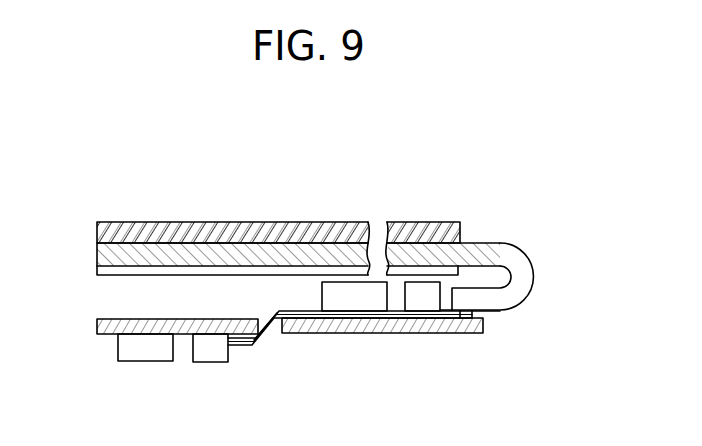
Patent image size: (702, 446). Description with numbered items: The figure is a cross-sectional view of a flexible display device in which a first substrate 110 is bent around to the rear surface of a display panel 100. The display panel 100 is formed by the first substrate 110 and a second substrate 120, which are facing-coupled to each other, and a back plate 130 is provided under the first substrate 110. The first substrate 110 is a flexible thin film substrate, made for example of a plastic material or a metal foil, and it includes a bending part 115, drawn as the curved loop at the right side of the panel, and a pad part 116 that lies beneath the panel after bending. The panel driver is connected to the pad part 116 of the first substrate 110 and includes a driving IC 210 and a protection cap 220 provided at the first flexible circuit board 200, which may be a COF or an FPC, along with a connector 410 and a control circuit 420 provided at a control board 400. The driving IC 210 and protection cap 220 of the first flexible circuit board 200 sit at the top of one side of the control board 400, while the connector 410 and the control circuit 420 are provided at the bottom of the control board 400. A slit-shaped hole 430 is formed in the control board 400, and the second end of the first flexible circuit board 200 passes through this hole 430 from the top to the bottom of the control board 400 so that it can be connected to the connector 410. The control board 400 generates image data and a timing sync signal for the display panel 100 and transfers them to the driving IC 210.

The display panel 100 is at (285, 163).
The first substrate 110 is at (176, 258).
The second substrate 120 is at (228, 237).
The back plate 130 is at (270, 272).
The bending part 115 is at (534, 264).
The pad part 116 is at (460, 320).
The first flexible circuit board 200 is at (267, 313).
The driving IC 210 is at (422, 298).
The protection cap 220 is at (353, 298).
The control board 400 is at (97, 325).
The connector 410 is at (213, 352).
The control circuit 420 is at (148, 348).
The hole 430 is at (277, 352).